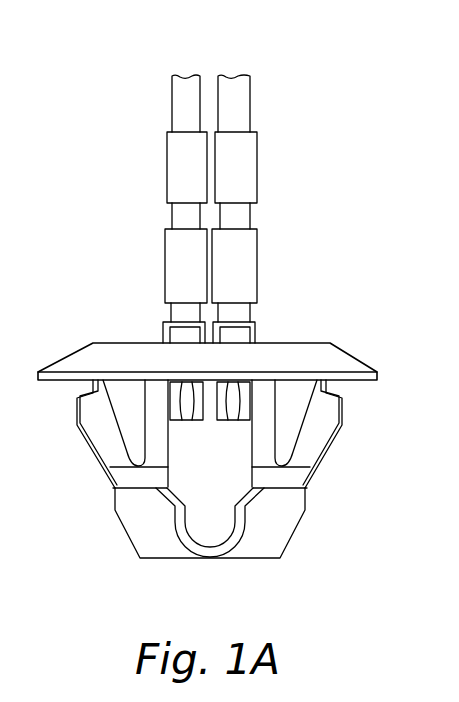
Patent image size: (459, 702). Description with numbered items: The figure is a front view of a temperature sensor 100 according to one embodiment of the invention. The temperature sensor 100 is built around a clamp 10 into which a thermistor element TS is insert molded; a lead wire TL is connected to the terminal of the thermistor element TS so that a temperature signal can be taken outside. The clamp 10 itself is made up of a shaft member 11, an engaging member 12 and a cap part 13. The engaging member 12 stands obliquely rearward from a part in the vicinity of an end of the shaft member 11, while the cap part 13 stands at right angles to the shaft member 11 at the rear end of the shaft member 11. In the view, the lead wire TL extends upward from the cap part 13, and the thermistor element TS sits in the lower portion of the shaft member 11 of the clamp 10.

The temperature sensor 100 is at (382, 52).
The clamp 10 is at (294, 324).
The shaft member 11 is at (262, 438).
The engaging member 12 is at (107, 433).
The cap part 13 is at (330, 357).
The lead wire TL is at (172, 93).
The thermistor element TS is at (218, 522).